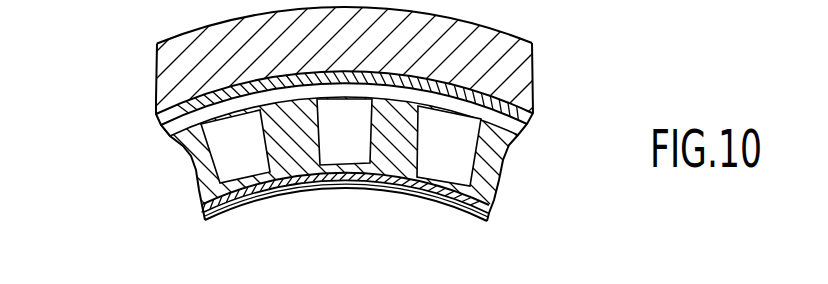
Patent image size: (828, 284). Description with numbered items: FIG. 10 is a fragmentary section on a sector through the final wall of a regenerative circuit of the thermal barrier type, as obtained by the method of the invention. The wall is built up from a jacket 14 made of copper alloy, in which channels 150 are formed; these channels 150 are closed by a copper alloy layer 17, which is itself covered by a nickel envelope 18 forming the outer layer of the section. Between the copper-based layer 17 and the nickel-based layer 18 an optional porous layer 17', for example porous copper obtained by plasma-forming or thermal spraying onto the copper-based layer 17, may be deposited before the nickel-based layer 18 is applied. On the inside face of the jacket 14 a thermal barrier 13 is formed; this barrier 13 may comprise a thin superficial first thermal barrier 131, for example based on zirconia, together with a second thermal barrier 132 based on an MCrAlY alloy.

The thermal barrier 13 is at (499, 207).
The jacket 14 is at (196, 164).
The copper alloy layer 17 is at (364, 97).
The porous layer 17' is at (156, 126).
The nickel envelope 18 is at (167, 72).
The first thermal barrier 131 is at (203, 221).
The second thermal barrier 132 is at (305, 185).
The channels 150 is at (263, 128).